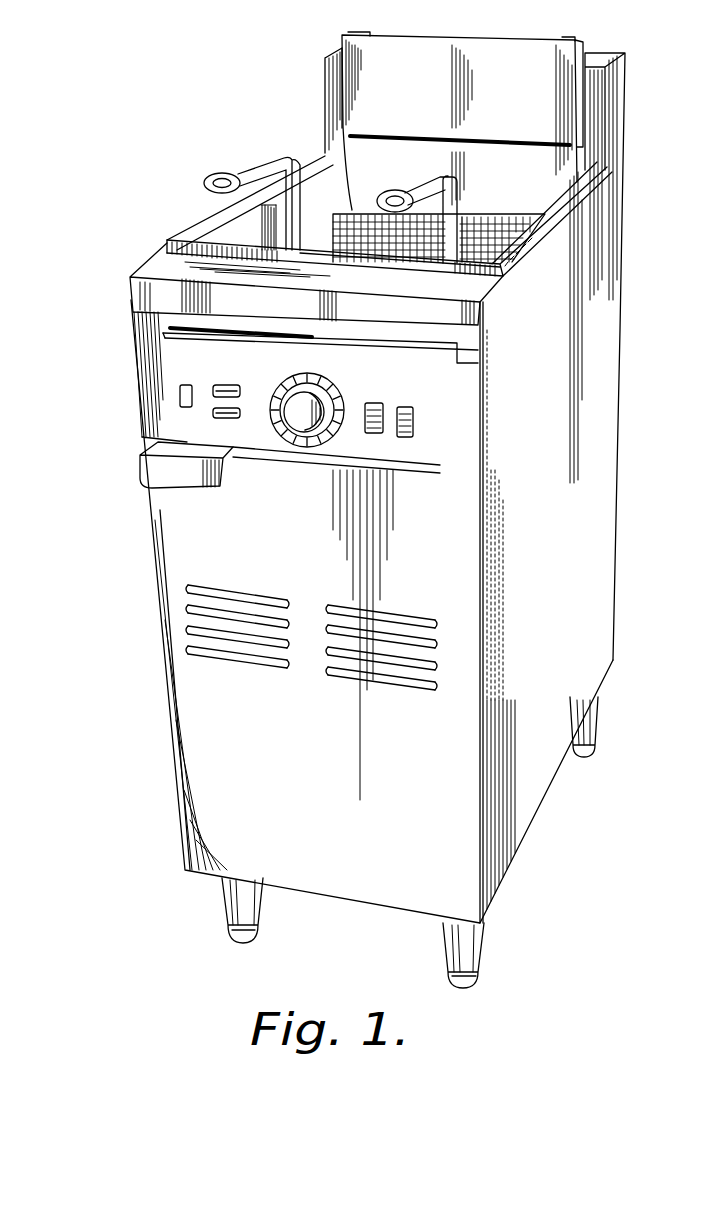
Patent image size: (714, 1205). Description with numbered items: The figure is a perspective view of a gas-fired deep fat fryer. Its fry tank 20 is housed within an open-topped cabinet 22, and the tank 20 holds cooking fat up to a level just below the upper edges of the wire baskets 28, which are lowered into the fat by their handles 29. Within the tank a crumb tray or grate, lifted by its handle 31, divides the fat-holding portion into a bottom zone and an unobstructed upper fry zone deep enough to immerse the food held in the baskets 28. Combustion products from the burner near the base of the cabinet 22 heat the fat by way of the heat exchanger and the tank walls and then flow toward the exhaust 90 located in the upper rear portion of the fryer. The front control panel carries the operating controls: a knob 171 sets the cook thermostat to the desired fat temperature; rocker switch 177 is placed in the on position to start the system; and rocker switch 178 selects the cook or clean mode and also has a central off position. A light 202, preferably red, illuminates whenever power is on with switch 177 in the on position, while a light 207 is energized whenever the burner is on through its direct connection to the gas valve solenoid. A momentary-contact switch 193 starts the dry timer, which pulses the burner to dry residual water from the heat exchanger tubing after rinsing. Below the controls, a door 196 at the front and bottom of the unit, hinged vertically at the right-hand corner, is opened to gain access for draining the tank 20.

The fry tank 20 is at (240, 229).
The cabinet 22 is at (170, 542).
The basket 28 is at (310, 180).
The handle 29 is at (233, 172).
The handle 31 is at (317, 241).
The exhaust 90 is at (593, 57).
The knob 171 is at (317, 447).
The rocker switch 177 is at (386, 400).
The rocker switch 178 is at (413, 436).
The momentary-contact switch 193 is at (180, 400).
The door 196 is at (311, 691).
The light 202 is at (228, 383).
The light 207 is at (223, 420).